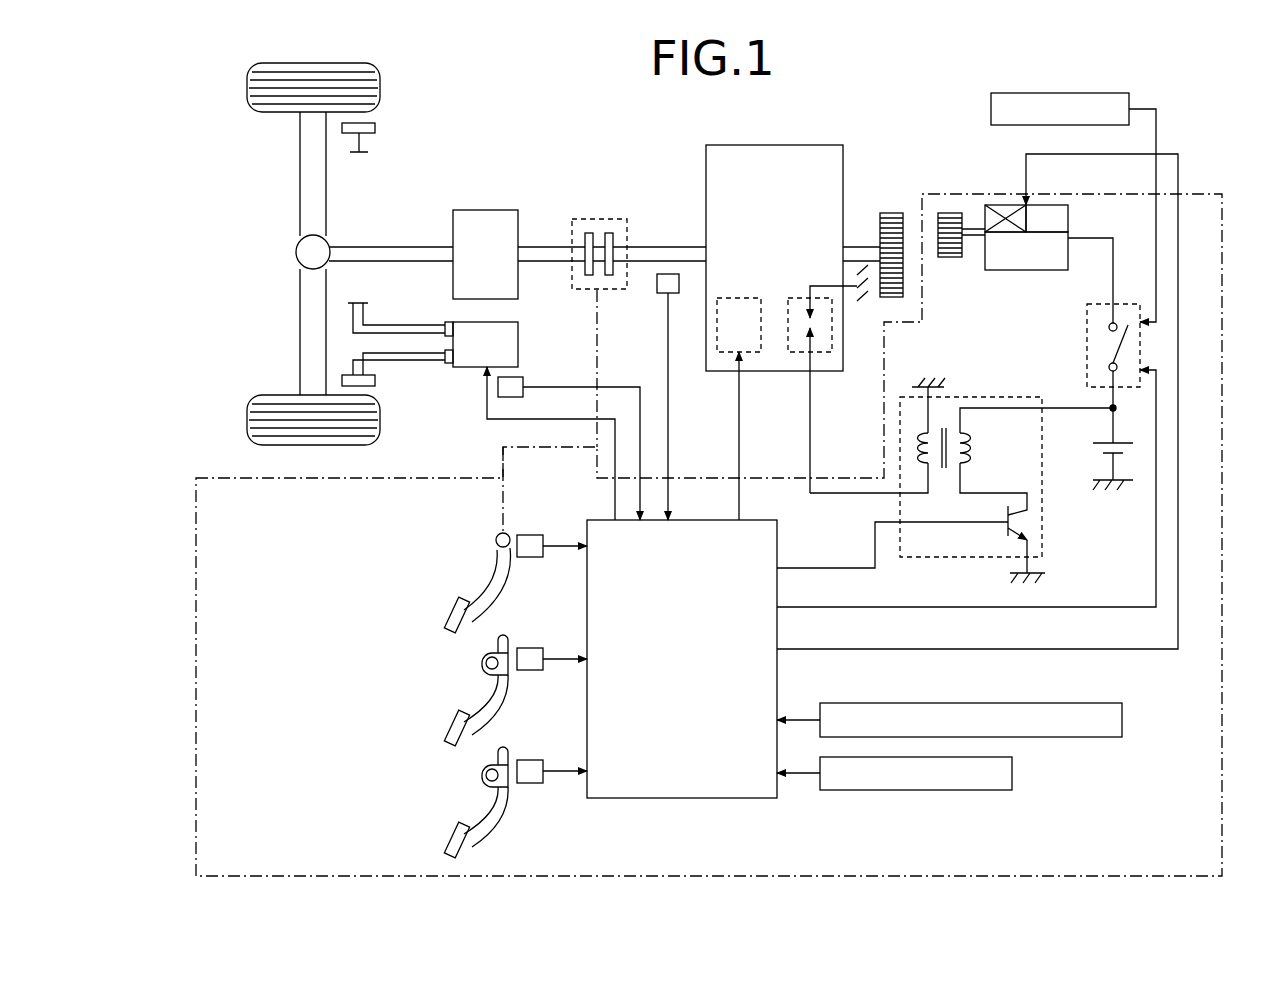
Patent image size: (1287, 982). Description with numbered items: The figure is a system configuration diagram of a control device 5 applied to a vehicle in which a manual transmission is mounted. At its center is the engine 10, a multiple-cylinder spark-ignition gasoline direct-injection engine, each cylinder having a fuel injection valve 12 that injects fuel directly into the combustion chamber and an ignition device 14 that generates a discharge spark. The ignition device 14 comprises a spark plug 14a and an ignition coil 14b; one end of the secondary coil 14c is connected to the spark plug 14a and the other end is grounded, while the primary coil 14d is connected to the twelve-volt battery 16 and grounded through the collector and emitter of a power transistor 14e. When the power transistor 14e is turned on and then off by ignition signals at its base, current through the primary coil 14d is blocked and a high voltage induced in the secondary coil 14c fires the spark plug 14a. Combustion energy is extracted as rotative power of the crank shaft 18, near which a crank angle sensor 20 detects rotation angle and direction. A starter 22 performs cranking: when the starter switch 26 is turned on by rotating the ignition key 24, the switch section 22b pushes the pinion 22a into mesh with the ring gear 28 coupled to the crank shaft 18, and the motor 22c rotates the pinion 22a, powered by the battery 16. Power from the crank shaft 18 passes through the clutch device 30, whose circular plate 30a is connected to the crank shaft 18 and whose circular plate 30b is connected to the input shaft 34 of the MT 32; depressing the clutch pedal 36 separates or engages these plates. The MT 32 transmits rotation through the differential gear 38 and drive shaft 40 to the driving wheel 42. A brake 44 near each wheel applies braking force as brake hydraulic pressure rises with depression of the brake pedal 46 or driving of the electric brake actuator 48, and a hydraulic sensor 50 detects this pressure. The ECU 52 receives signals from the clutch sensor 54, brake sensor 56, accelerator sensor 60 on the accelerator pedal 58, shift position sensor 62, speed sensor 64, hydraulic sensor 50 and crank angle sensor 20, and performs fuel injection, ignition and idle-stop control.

The control device 5 is at (1212, 194).
The engine 10 is at (808, 145).
The fuel injection valve 12 is at (717, 325).
The ignition device 14 is at (945, 491).
The spark plug 14a is at (788, 355).
The ignition coil 14b is at (940, 557).
The secondary coil 14c is at (937, 468).
The primary coil 14d is at (970, 455).
The power transistor 14e is at (1015, 538).
The battery 16 is at (1108, 455).
The crank shaft 18 is at (660, 247).
The crank angle sensor 20 is at (657, 290).
The starter 22 is at (977, 390).
The pinion 22a is at (948, 257).
The switch section 22b is at (1005, 205).
The motor 22c is at (1068, 220).
The ignition key 24 is at (991, 110).
The starter switch 26 is at (1087, 312).
The ring gear 28 is at (891, 213).
The clutch device 30 is at (572, 222).
The circular plate 30a is at (609, 233).
The circular plate 30b is at (589, 233).
The MT 32 is at (485, 210).
The input shaft 34 is at (553, 262).
The clutch pedal 36 is at (492, 590).
The differential gear 38 is at (296, 252).
The drive shaft 40 is at (300, 174).
The driving wheel 42 is at (378, 108).
The brake 44 is at (376, 130).
The brake pedal 46 is at (490, 704).
The electric brake actuator 48 is at (518, 345).
The hydraulic sensor 50 is at (523, 397).
The ECU 52 is at (667, 798).
The clutch sensor 54 is at (540, 557).
The brake sensor 56 is at (540, 670).
The accelerator pedal 58 is at (490, 815).
The accelerator sensor 60 is at (540, 783).
The shift position sensor 62 is at (1122, 722).
The speed sensor 64 is at (1012, 775).